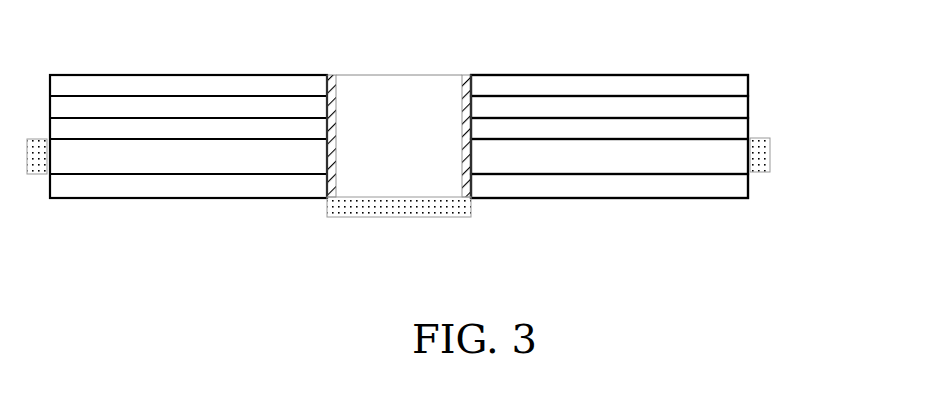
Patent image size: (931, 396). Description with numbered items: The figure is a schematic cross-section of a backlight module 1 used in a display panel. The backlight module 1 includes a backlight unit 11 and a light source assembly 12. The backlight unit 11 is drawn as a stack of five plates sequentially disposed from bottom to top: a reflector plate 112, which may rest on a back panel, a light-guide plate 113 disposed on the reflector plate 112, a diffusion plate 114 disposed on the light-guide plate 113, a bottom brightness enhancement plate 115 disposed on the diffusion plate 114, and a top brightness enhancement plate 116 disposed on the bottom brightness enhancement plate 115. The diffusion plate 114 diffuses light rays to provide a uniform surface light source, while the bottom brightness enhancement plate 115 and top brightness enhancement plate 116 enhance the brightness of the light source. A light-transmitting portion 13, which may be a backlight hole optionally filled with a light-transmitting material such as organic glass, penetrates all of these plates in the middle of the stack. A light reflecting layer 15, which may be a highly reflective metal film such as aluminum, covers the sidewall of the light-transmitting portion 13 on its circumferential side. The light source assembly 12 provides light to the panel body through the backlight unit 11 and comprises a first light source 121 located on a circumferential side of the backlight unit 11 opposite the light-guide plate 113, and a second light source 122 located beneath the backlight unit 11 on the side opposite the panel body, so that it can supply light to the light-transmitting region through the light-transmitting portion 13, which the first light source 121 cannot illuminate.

The backlight module 1 is at (711, 75).
The backlight unit 11 is at (838, 76).
The reflector plate 112 is at (733, 190).
The light-guide plate 113 is at (732, 160).
The diffusion plate 114 is at (732, 128).
The bottom brightness enhancement plate 115 is at (731, 107).
The top brightness enhancement plate 116 is at (730, 85).
The light source assembly 12 is at (249, 215).
The first light source 121 is at (38, 174).
The second light source 122 is at (340, 217).
The light-transmitting portion 13 is at (412, 110).
The light reflecting layer 15 is at (331, 74).